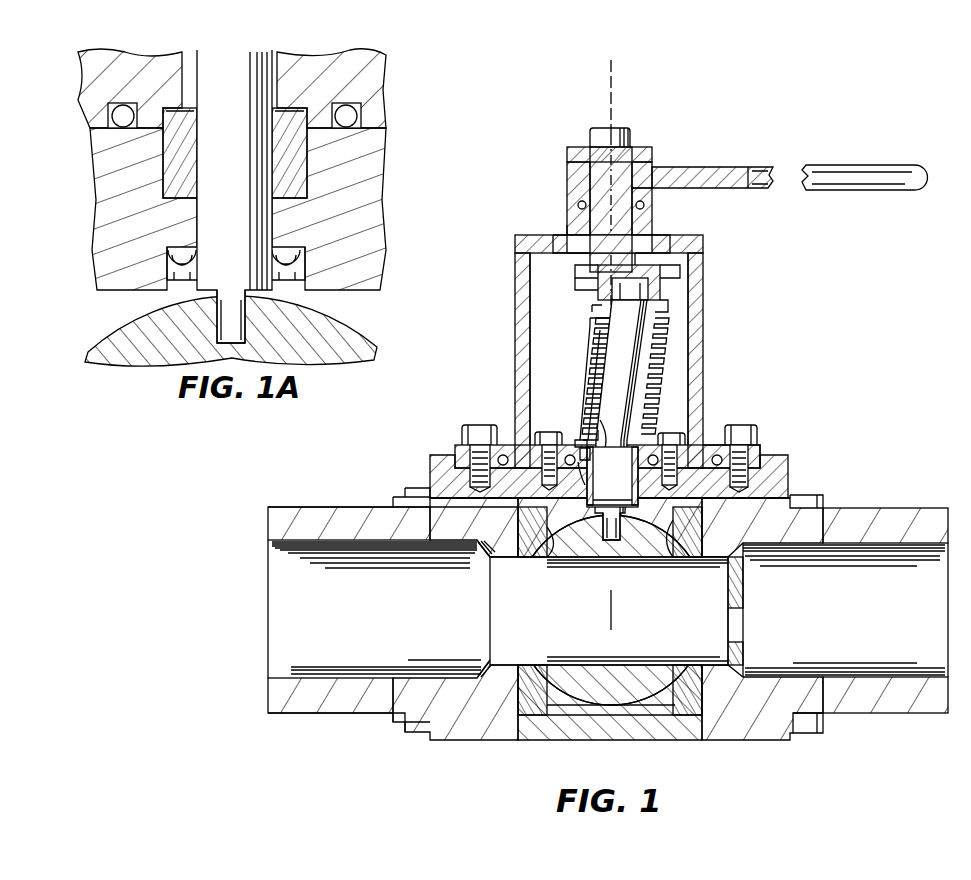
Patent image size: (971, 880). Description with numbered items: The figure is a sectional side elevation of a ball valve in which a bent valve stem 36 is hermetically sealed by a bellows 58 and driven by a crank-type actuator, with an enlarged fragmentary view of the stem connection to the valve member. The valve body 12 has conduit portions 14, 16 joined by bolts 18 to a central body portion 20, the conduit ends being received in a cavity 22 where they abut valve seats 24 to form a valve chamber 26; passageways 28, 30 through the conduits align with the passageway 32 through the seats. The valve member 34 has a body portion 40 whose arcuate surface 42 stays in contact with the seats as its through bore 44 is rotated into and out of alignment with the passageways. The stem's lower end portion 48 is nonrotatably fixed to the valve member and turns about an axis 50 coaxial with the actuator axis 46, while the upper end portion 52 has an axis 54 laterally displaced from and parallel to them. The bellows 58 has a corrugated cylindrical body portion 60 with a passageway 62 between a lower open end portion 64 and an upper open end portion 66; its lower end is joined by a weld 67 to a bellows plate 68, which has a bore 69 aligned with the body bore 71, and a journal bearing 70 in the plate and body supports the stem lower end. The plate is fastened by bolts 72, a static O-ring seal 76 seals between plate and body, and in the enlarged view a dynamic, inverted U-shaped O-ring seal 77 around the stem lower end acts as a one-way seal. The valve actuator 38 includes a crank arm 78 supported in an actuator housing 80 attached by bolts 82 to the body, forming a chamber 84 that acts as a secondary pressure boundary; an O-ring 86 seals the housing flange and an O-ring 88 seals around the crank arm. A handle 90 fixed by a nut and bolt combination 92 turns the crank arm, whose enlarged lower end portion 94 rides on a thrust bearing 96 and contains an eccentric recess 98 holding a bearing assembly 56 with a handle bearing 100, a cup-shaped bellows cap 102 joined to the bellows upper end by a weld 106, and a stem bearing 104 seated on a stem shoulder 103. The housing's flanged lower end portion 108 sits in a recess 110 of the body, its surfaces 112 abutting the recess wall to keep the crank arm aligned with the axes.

In FIG. 1, the valve body 12 is at (318, 468).
In FIG. 1, the conduit portion 14 is at (270, 515).
In FIG. 1, the conduit portion 16 is at (912, 515).
In FIG. 1, the bolts 18 is at (822, 497).
In FIG. 1A, the central body portion 20 is at (372, 216).
In FIG. 1, the central body portion 20 is at (432, 480).
In FIG. 1, the cavity 22 is at (662, 706).
In FIG. 1, the valve seats 24 is at (525, 520).
In FIG. 1, the valve chamber 26 is at (668, 542).
In FIG. 1, the passageway 28 is at (372, 505).
In FIG. 1, the passageway 30 is at (882, 540).
In FIG. 1, the passageway 32 is at (702, 678).
In FIG. 1A, the valve member 34 is at (132, 352).
In FIG. 1, the valve member 34 is at (580, 552).
In FIG. 1A, the valve stem 36 is at (232, 104).
In FIG. 1, the valve stem 36 is at (637, 382).
In FIG. 1, the valve actuator 38 is at (693, 203).
In FIG. 1, the body portion 40 is at (600, 655).
In FIG. 1, the arcuate surface 42 is at (590, 718).
In FIG. 1, the through bore 44 is at (550, 562).
In FIG. 1, the axis 46 is at (607, 80).
In FIG. 1A, the lower end portion 48 is at (222, 300).
In FIG. 1, the lower end portion 48 is at (607, 542).
In FIG. 1, the axis 50 is at (613, 612).
In FIG. 1, the upper end portion 52 is at (662, 292).
In FIG. 1, the axis 54 is at (612, 335).
In FIG. 1, the bearing assembly 56 is at (678, 308).
In FIG. 1, the bellows 58 is at (672, 360).
In FIG. 1, the body portion 60 is at (590, 355).
In FIG. 1, the passageway 62 is at (598, 372).
In FIG. 1, the lower open end portion 64 is at (585, 425).
In FIG. 1, the upper open end portion 66 is at (596, 330).
In FIG. 1, the weld 67 is at (582, 440).
In FIG. 1A, the bellows plate 68 is at (352, 78).
In FIG. 1, the bellows plate 68 is at (655, 440).
In FIG. 1, the bore 69 is at (600, 430).
In FIG. 1A, the bearing 70 is at (300, 151).
In FIG. 1, the bearing 70 is at (640, 488).
In FIG. 1A, the bore 71 is at (165, 150).
In FIG. 1, the bore 71 is at (599, 503).
In FIG. 1, the bolts 72 is at (540, 435).
In FIG. 1A, the static O-ring seal 76 is at (352, 114).
In FIG. 1, the static O-ring seal 76 is at (578, 472).
In FIG. 1A, the dynamic O-ring seal 77 is at (165, 262).
In FIG. 1, the crank arm 78 is at (600, 176).
In FIG. 1, the actuator housing 80 is at (515, 292).
In FIG. 1, the bolts 82 is at (470, 428).
In FIG. 1, the chamber 84 is at (530, 358).
In FIG. 1, the O-ring 86 is at (732, 462).
In FIG. 1, the O-ring 88 is at (580, 205).
In FIG. 1, the handle 90 is at (890, 166).
In FIG. 1, the nut and bolt combination 92 is at (600, 135).
In FIG. 1, the enlarged lower end portion 94 is at (645, 240).
In FIG. 1, the thrust bearing 96 is at (568, 240).
In FIG. 1, the recess 98 is at (660, 262).
In FIG. 1, the handle bearing 100 is at (660, 278).
In FIG. 1, the bellows cap 102 is at (600, 302).
In FIG. 1, the stem shoulder 103 is at (633, 350).
In FIG. 1, the stem bearing 104 is at (660, 306).
In FIG. 1, the weld 106 is at (598, 318).
In FIG. 1, the flanged lower end portion 108 is at (462, 448).
In FIG. 1, the recess 110 is at (500, 462).
In FIG. 1, the surfaces 112 is at (762, 457).